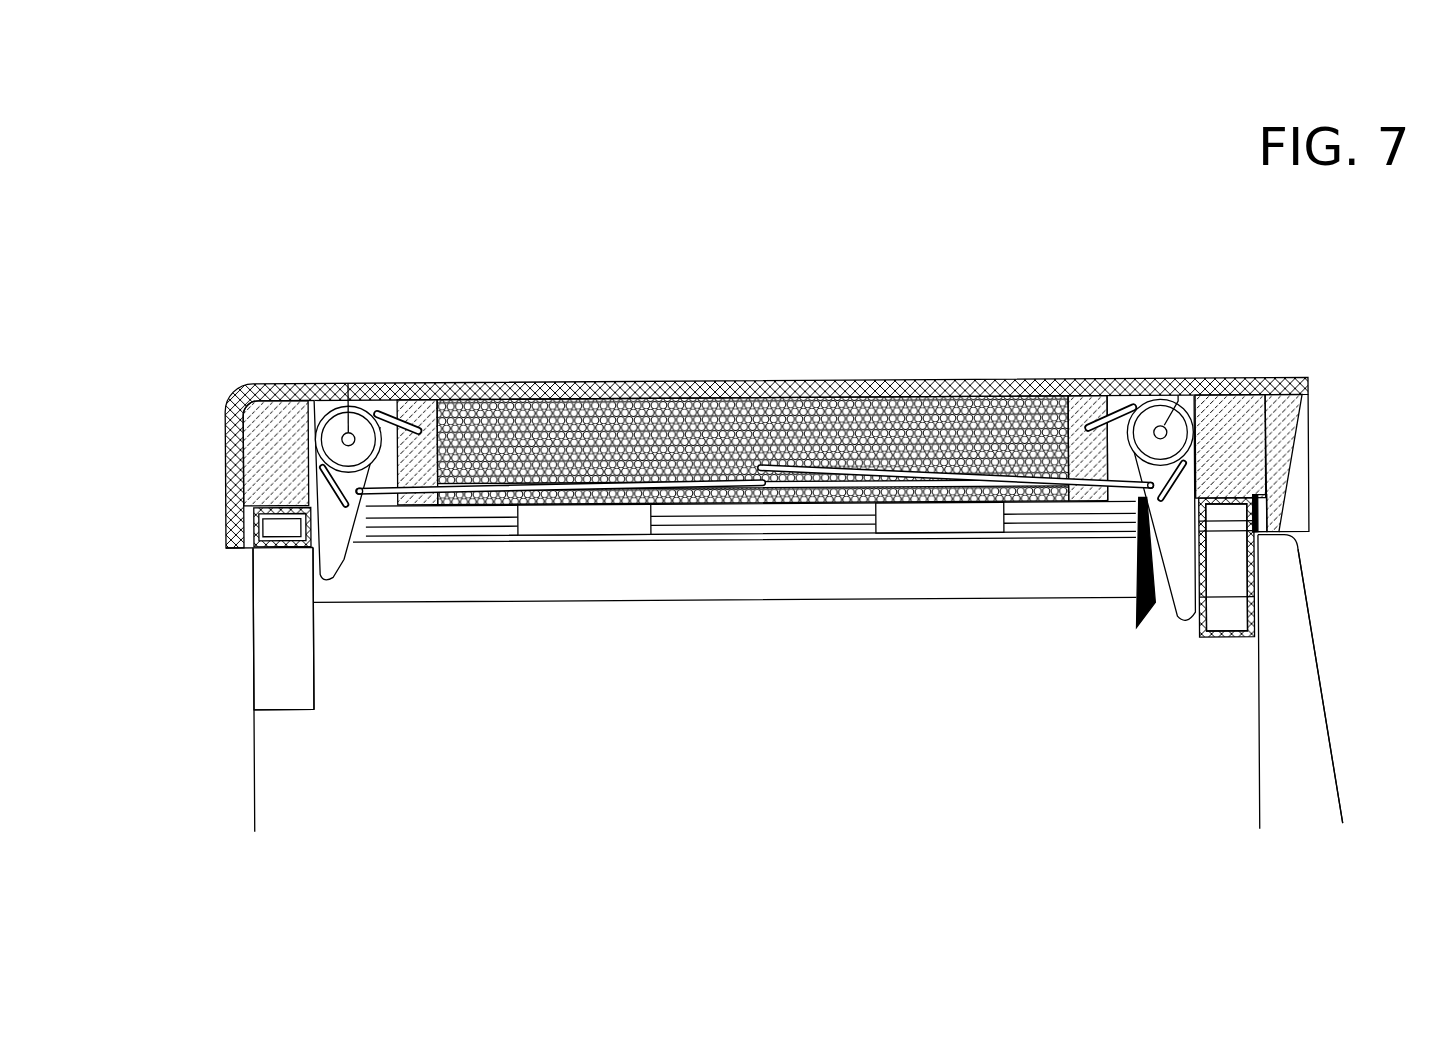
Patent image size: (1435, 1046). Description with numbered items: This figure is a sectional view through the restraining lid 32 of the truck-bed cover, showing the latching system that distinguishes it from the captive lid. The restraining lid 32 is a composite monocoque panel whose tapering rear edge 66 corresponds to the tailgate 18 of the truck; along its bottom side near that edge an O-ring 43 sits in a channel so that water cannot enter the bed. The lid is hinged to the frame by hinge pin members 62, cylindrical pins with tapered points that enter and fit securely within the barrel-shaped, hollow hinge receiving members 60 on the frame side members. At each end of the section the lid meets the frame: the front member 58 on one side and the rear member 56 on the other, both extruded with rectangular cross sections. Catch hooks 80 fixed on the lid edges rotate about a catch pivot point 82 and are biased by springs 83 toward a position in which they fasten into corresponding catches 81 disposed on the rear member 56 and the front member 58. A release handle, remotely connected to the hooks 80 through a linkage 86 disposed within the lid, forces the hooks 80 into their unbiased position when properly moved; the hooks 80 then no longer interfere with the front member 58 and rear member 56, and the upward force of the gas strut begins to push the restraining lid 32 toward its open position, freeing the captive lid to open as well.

The tailgate 18 is at (1288, 675).
The restraining lid 32 is at (647, 421).
The O-ring 43 is at (1270, 522).
The rear member 56 is at (1257, 579).
The front member 58 is at (258, 523).
The hinge receiving member 60 is at (458, 527).
The hinge pin member 62 is at (622, 531).
The rear edge 66 is at (290, 420).
The catch hook 80 is at (336, 561).
The catch 81 is at (275, 550).
The catch pivot point 82 is at (348, 395).
The spring 83 is at (393, 420).
The linkage 86 is at (545, 494).